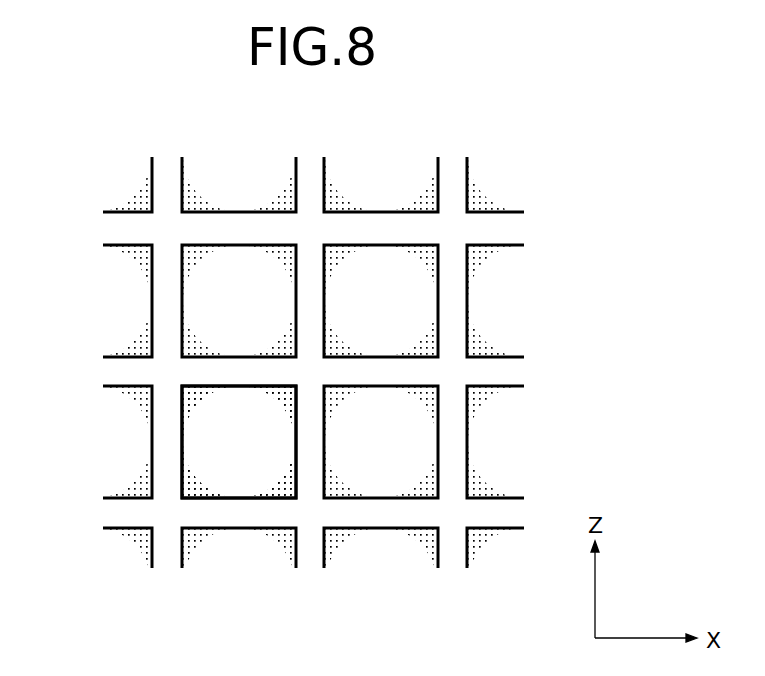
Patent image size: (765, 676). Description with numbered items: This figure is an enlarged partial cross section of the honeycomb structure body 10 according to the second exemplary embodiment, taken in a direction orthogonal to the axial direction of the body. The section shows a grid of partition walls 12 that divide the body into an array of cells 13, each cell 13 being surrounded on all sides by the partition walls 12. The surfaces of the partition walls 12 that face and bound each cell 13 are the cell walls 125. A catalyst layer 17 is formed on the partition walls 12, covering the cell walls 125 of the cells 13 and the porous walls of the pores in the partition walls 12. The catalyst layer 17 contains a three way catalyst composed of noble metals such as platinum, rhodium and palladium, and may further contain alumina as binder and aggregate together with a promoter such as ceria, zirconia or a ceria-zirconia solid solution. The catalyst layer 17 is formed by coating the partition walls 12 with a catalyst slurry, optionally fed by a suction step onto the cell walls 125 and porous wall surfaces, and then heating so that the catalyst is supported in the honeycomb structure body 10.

The light control member 10 is at (325, 358).
The partition walls 12 is at (450, 294).
The cell 13 is at (235, 467).
The catalyst layer 17 is at (198, 254).
The cell walls 125 is at (327, 442).